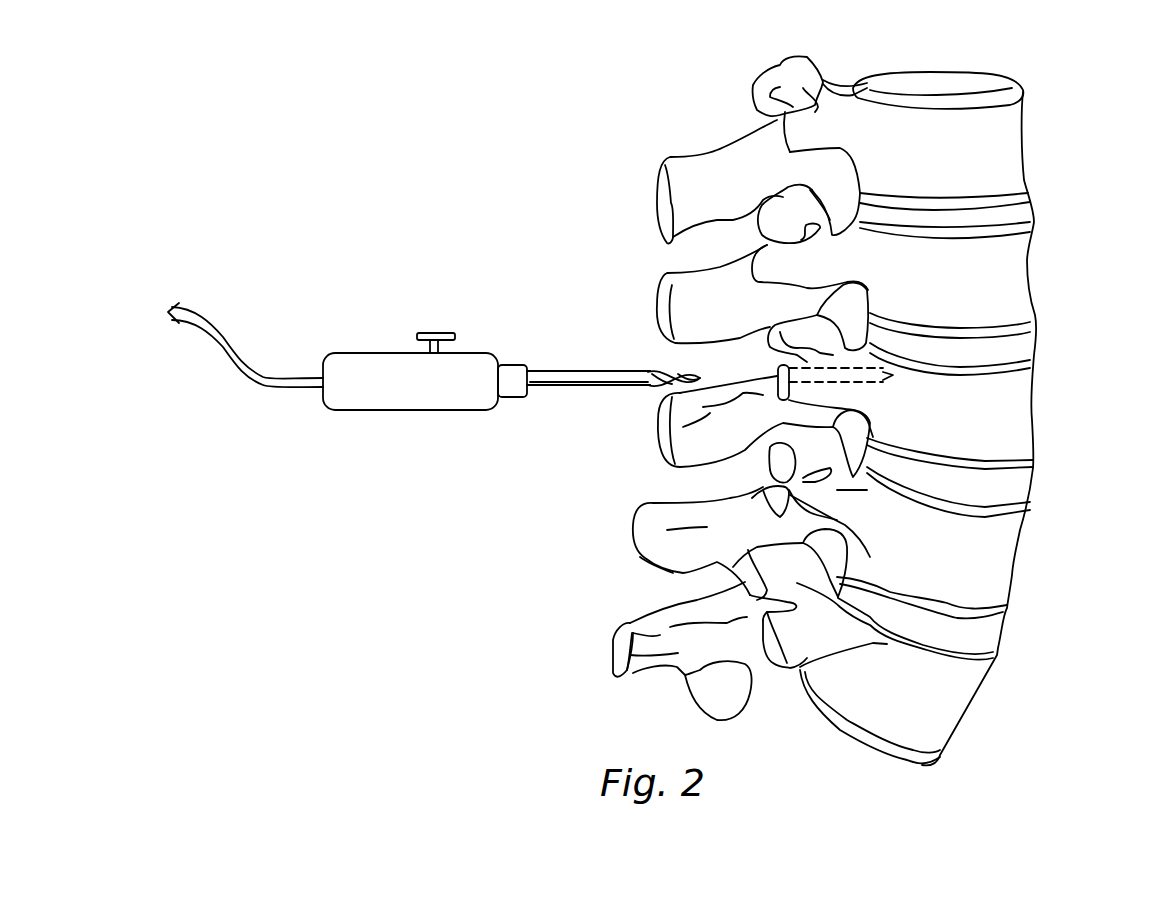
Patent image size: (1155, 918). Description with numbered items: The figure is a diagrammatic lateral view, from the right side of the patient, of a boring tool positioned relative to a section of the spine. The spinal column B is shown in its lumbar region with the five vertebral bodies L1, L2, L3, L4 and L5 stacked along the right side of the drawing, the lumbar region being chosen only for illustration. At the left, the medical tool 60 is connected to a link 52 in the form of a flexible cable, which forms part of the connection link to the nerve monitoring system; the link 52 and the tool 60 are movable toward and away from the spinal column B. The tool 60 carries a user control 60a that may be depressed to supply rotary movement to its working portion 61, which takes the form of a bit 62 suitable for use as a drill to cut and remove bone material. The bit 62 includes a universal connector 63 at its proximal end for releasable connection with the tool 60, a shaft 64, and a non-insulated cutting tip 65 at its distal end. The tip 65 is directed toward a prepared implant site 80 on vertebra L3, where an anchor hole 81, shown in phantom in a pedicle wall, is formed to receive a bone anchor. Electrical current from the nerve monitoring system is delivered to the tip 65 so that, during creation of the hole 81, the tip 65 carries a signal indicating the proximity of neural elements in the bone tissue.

The link 52 is at (206, 316).
The medical tool 60 is at (338, 322).
The user control 60a is at (440, 331).
The working portion 61 is at (578, 350).
The bit 62 is at (613, 388).
The universal connector 63 is at (531, 398).
The shaft 64 is at (567, 386).
The cutting tip 65 is at (700, 377).
The implant site 80 is at (871, 400).
The anchor hole 81 is at (887, 371).
The spinal column B is at (1047, 81).
The vertebral body L1 is at (997, 148).
The vertebral body L2 is at (1007, 277).
The vertebral body L3 is at (1008, 415).
The vertebral body L4 is at (998, 558).
The vertebral body L5 is at (933, 710).